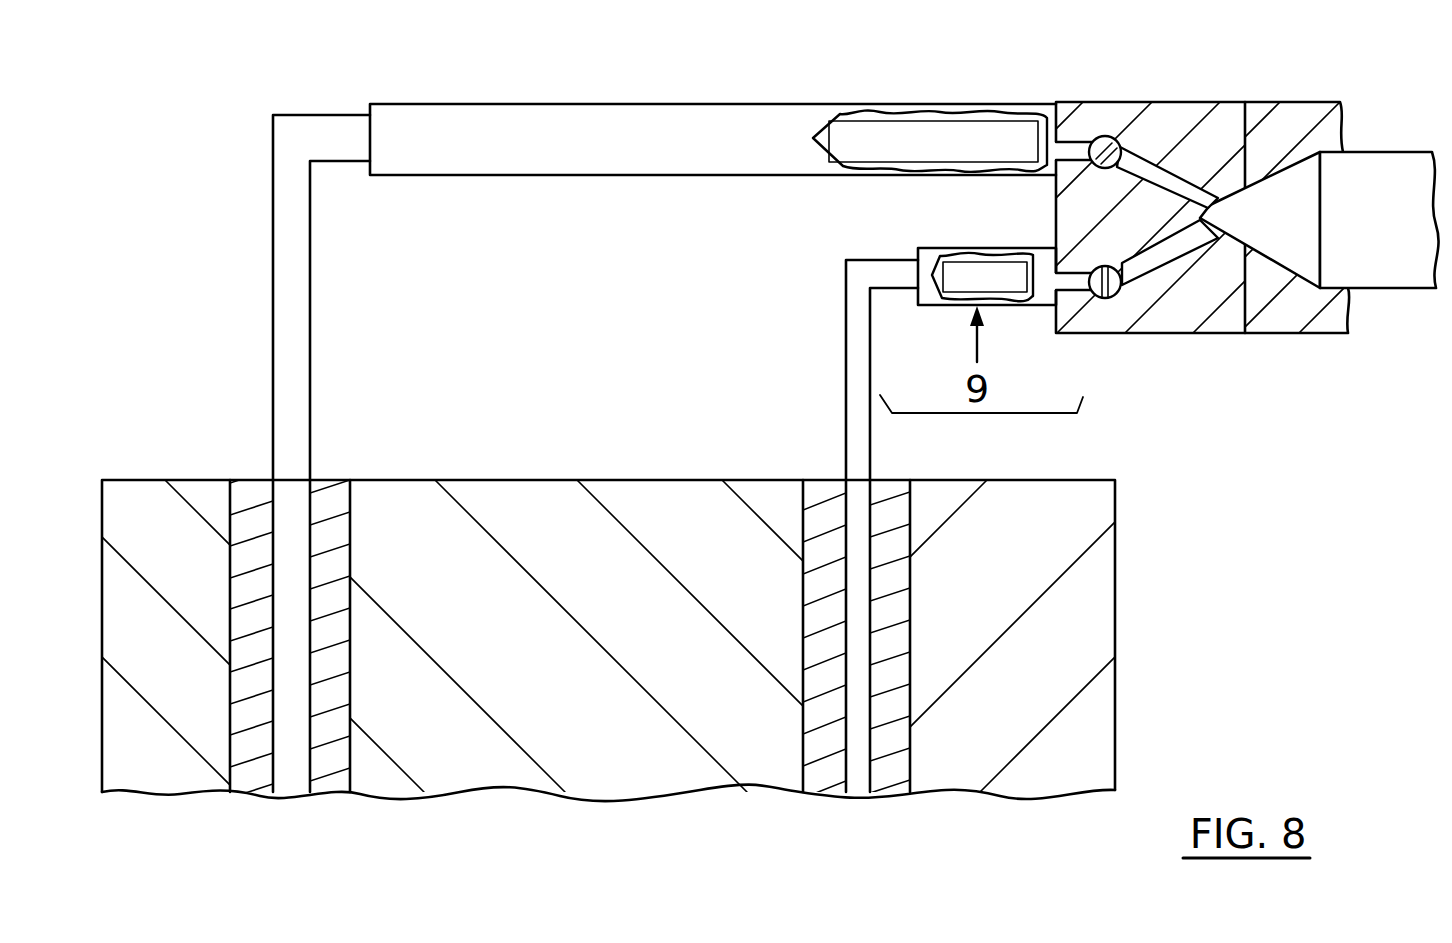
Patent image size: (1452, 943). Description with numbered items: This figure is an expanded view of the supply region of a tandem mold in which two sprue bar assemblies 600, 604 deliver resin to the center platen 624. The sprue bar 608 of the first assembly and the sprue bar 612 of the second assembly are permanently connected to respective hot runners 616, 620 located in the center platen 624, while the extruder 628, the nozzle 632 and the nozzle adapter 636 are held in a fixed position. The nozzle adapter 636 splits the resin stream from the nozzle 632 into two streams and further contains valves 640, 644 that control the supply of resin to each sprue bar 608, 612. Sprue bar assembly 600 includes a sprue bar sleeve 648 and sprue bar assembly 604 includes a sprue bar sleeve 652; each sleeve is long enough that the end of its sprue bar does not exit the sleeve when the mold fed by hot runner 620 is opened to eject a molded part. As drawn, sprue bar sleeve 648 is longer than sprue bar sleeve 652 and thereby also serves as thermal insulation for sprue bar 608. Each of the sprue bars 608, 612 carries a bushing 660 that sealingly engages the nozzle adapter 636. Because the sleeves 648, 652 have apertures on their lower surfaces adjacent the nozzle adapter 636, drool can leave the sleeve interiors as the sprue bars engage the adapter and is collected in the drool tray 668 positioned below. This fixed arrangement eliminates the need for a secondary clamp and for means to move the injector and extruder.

The sprue bar assembly 600 is at (377, 86).
The sprue bar assembly 604 is at (1050, 228).
The sprue bar 608 is at (273, 317).
The sprue bar 612 is at (846, 352).
The hot runner 616 is at (351, 630).
The hot runner 620 is at (910, 628).
The center platen 624 is at (592, 480).
The extruder 628 is at (1392, 168).
The nozzle 632 is at (1288, 115).
The nozzle adapter 636 is at (1183, 112).
The valve 640 is at (1112, 298).
The valve 644 is at (1107, 137).
The sprue bar sleeve 648 is at (522, 175).
The sprue bar sleeve 652 is at (915, 247).
The bushing 660 is at (1043, 118).
The drool tray 668 is at (1015, 413).